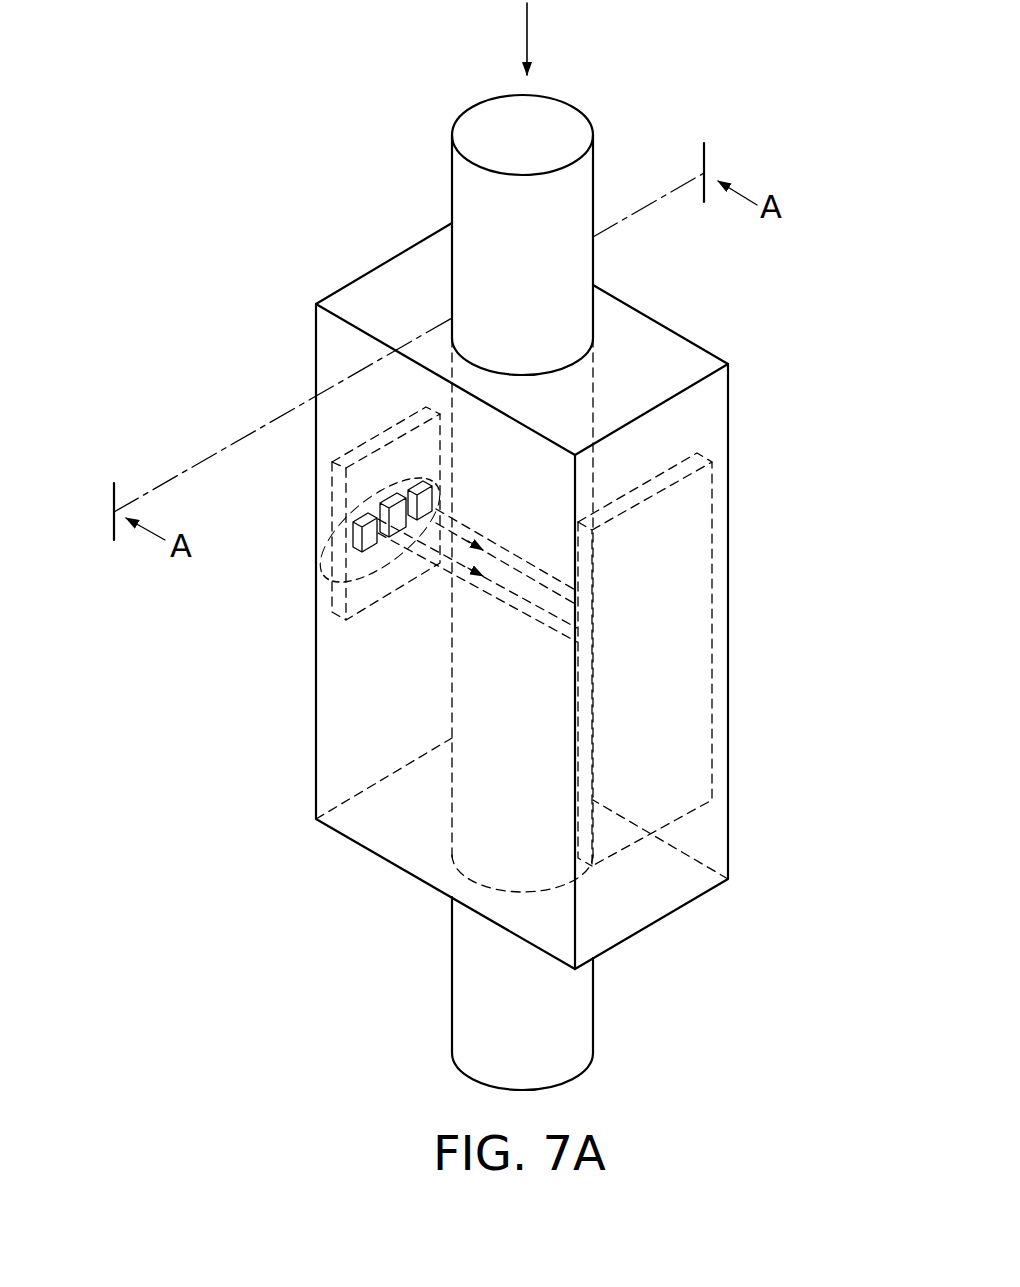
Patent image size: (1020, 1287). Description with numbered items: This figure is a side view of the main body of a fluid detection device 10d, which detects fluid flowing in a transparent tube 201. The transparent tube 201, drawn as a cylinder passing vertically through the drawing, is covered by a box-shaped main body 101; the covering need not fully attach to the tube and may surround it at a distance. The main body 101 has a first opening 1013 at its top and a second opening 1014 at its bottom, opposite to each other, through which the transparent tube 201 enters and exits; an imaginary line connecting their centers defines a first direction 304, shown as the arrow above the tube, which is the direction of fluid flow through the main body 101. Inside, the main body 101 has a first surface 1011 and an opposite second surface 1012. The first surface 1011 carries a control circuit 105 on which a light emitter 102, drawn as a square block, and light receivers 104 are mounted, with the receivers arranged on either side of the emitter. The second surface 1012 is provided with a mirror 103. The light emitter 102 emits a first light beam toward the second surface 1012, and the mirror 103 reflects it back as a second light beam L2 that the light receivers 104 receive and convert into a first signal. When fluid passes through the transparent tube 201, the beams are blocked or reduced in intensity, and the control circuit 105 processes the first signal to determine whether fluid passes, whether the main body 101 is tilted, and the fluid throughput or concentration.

The fluid detection device 10d is at (288, 120).
The first direction 304 is at (527, 25).
The transparent tube 201 is at (465, 177).
The main body 101 is at (716, 396).
The first surface 1011 is at (318, 468).
The second surface 1012 is at (661, 644).
The first opening 1013 is at (597, 357).
The second opening 1014 is at (585, 875).
The light emitter 102 is at (383, 535).
The mirror 103 is at (700, 562).
The light receiver 104 is at (436, 502).
The control circuit 105 is at (338, 585).
The second light beam L2 is at (395, 545).